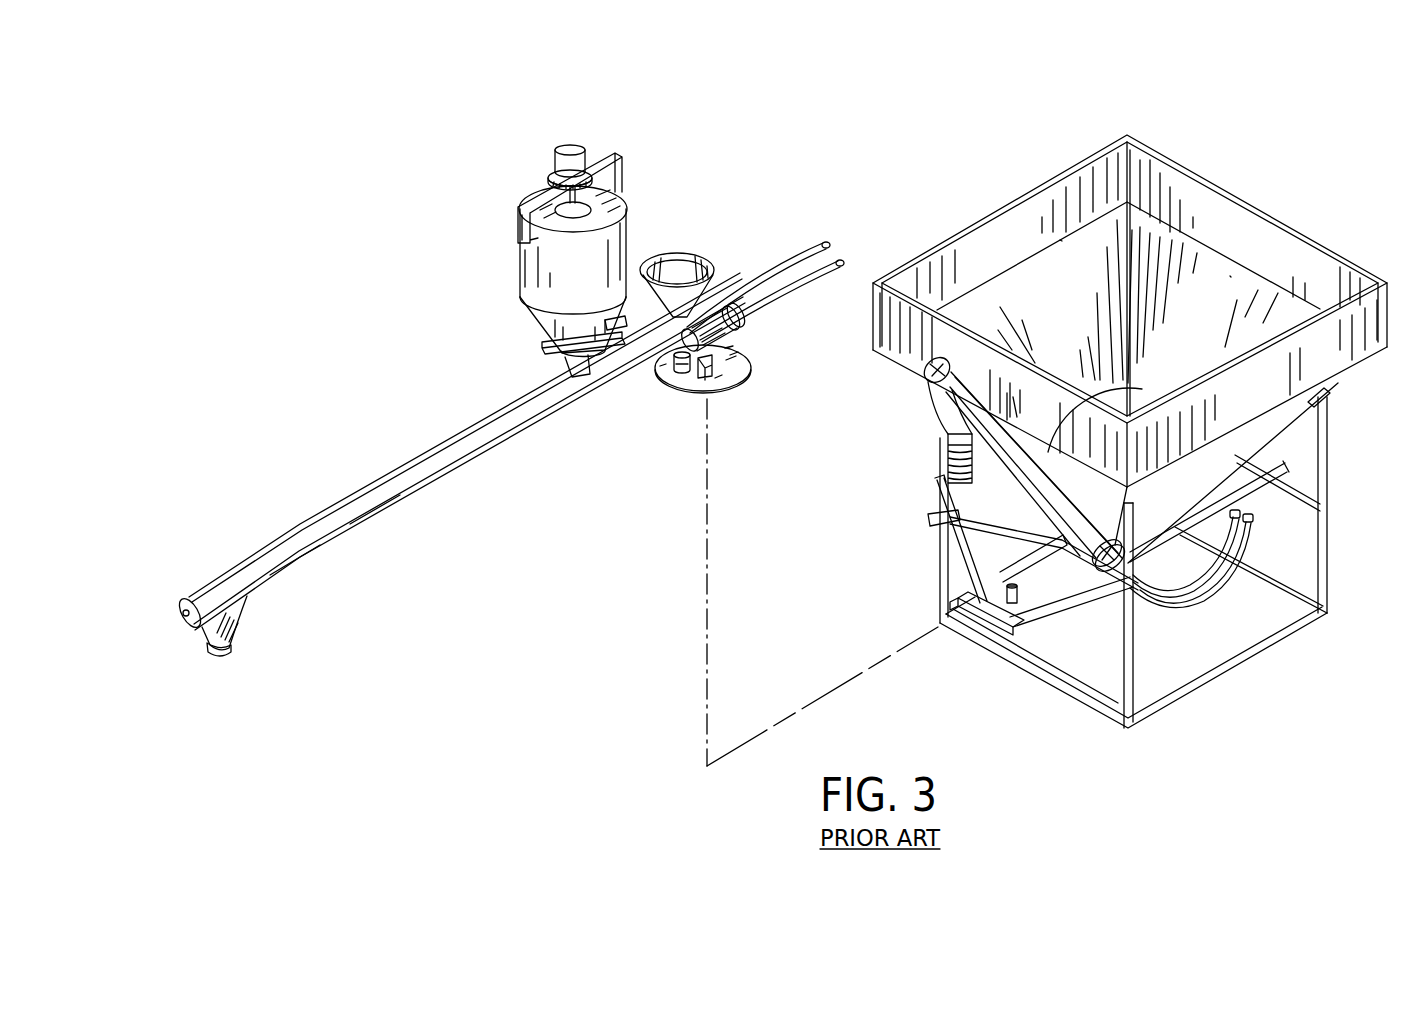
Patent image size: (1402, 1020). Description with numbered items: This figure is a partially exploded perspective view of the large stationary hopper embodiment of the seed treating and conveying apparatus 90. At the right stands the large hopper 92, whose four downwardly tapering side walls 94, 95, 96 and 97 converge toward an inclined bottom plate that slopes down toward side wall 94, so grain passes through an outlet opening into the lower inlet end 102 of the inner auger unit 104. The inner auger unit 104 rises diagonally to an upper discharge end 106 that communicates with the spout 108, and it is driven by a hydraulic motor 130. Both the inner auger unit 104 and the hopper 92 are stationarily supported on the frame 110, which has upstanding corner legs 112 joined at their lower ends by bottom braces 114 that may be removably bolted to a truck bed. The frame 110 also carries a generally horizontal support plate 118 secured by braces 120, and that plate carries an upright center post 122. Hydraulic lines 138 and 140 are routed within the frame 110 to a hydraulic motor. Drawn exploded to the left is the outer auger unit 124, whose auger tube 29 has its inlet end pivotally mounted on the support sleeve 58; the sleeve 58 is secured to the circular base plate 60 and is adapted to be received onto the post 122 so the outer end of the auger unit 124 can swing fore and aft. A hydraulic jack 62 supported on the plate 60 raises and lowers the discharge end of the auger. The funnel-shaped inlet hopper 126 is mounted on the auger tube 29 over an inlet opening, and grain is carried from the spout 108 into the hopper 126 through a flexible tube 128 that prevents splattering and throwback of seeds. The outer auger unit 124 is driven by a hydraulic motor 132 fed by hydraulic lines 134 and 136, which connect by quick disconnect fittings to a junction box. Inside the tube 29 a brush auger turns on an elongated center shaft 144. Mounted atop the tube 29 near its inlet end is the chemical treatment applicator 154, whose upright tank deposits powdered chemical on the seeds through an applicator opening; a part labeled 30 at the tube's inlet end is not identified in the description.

The auger tube 29 is at (393, 487).
The rail support foot 30 is at (222, 625).
The support sleeve 58 is at (718, 361).
The circular base plate 60 is at (718, 392).
The hydraulic jack 62 is at (672, 393).
The seed treating and conveying apparatus 90 is at (1262, 138).
The large hopper 92 is at (1290, 221).
The side wall 94 is at (1127, 383).
The side wall 95 is at (1037, 280).
The hopper inner wall 96 is at (1228, 273).
The side wall 97 is at (1332, 396).
The lower inlet end 102 is at (1104, 515).
The inner auger unit 104 is at (1013, 466).
The upper discharge end 106 is at (957, 378).
The spout 108 is at (945, 413).
The frame 110 is at (1330, 543).
The upstanding corner legs 112 is at (938, 563).
The bottom braces 114 is at (1023, 672).
The horizontal support plate 118 is at (977, 628).
The braces 120 is at (962, 517).
The upright center post 122 is at (1003, 591).
The auger unit 124 is at (668, 206).
The inlet hopper 126 is at (686, 267).
The flexible tube 128 is at (950, 463).
The hydraulic motor 130 is at (1137, 537).
The hydraulic motor 132 is at (735, 333).
The hydraulic line 134 is at (773, 267).
The hydraulic line 136 is at (818, 272).
The hydraulic line 138 is at (1200, 572).
The hydraulic line 140 is at (1172, 590).
The elongated center shaft 144 is at (185, 616).
The chemical treatment applicator 154 is at (628, 196).